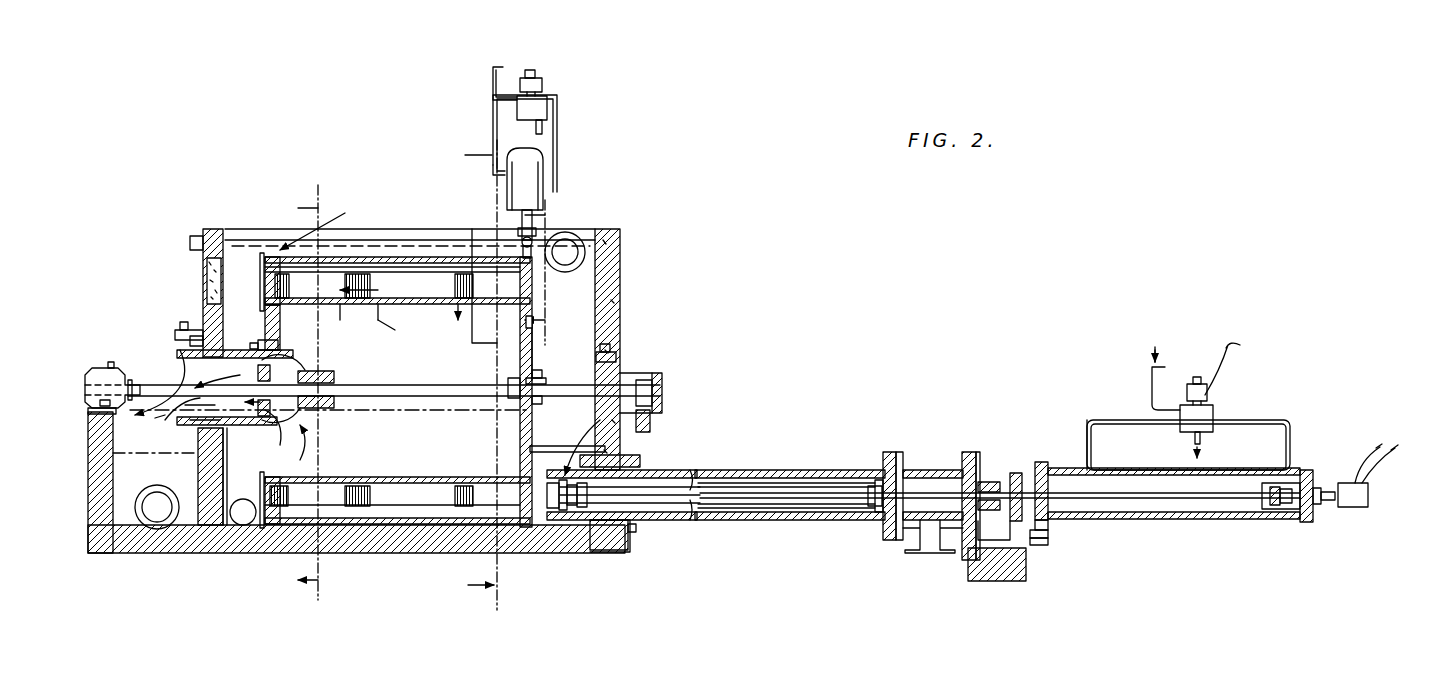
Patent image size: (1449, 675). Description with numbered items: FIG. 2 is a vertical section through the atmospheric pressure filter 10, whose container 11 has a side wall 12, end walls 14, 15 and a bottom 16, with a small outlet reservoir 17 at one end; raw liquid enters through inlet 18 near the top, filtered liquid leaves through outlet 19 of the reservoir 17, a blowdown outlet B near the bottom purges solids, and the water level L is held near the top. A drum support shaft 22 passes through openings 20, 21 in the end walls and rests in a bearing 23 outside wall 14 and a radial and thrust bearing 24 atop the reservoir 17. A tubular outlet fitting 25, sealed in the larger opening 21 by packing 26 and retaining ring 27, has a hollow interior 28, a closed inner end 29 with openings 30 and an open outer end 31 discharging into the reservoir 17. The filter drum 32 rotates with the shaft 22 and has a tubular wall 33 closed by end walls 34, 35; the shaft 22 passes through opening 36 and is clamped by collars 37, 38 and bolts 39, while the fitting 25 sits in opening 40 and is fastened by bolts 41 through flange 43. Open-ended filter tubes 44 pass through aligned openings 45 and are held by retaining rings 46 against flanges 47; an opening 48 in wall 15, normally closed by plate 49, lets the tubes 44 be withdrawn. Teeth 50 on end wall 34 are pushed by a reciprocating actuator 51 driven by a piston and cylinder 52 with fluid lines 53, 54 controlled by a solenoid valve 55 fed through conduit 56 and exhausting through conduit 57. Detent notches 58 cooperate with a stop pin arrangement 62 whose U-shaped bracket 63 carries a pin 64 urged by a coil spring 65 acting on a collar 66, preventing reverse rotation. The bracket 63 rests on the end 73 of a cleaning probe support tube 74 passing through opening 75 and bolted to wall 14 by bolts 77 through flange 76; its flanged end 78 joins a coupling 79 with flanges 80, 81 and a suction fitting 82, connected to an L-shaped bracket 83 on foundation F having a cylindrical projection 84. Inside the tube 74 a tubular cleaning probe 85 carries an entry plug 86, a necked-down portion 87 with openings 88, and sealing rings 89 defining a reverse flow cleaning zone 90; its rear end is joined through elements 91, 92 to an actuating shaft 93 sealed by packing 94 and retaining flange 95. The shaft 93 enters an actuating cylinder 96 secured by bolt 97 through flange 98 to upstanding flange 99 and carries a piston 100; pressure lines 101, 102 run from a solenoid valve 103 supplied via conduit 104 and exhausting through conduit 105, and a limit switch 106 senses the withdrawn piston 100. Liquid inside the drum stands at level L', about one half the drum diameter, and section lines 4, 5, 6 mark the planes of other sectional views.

The atmospheric pressure filter 10 is at (680, 192).
The container 11 is at (620, 300).
The side wall 12 is at (252, 229).
The end wall 14 is at (620, 262).
The end wall 15 is at (198, 478).
The bottom 16 is at (388, 553).
The outlet reservoir 17 is at (105, 470).
The raw liquid inlet 18 is at (580, 238).
The filtered liquid outlet 19 is at (150, 529).
The opening 20 is at (618, 358).
The opening 21 is at (227, 478).
The drum support shaft 22 is at (403, 385).
The bearing 23 is at (658, 373).
The radial and thrust bearing 24 is at (95, 368).
The tubular outlet fitting 25 is at (236, 350).
The packing material 26 is at (176, 352).
The packing retaining ring 27 is at (185, 330).
The hollow interior 28 is at (275, 365).
The closed inner end 29 is at (320, 371).
The openings 30 is at (318, 408).
The open outer end 31 is at (170, 418).
The filter drum 32 is at (430, 257).
The tubular wall 33 is at (363, 257).
The end wall 34 is at (508, 395).
The end wall 35 is at (305, 450).
The opening 36 is at (520, 380).
The clamping and sealing plate 37 is at (542, 372).
The clamping and sealing plate 38 is at (520, 370).
The bolts 39 is at (548, 380).
The central opening 40 is at (280, 445).
The bolts 41 is at (258, 344).
The annular flange 43 is at (280, 318).
The filter tubes 44 is at (374, 304).
The openings 45 is at (430, 500).
The tube retaining rings 46 is at (270, 290).
The annular flanges 47 is at (272, 257).
The enlarged opening 48 is at (207, 260).
The closure plate 49 is at (196, 236).
The drum actuating teeth 50 is at (532, 240).
The reciprocating actuator 51 is at (518, 215).
The piston and cylinder arrangement 52 is at (543, 165).
The fluid line 53 is at (557, 135).
The fluid line 54 is at (493, 130).
The solenoid valve 55 is at (542, 96).
The conduit 56 is at (496, 67).
The exhaust conduit 57 is at (542, 127).
The detent notches 58 is at (532, 322).
The stop pin arrangement 62 is at (660, 390).
The U-shaped support bracket 63 is at (648, 430).
The stop pin 64 is at (535, 475).
The coil spring 65 is at (640, 460).
The collar 66 is at (577, 436).
The end 73 is at (552, 530).
The cleaning probe support tube 74 is at (740, 470).
The opening 75 is at (600, 530).
The annular flange 76 is at (628, 545).
The bolts 77 is at (636, 530).
The outer flanged end 78 is at (888, 452).
The coupling member 79 is at (920, 470).
The flange 80 is at (902, 452).
The flange 81 is at (968, 452).
The fitting 82 is at (918, 553).
The L-shaped bracket support 83 is at (980, 460).
The cylindrical projection 84 is at (988, 482).
The cleaning probe 85 is at (725, 520).
The entry plug 86 is at (562, 528).
The necked down forward end portion 87 is at (582, 528).
The openings 88 is at (590, 500).
The sealing rings 89 is at (700, 470).
The reverse flow cleaning zone 90 is at (572, 528).
The collar 91 is at (878, 520).
The rod 92 is at (870, 505).
The actuating shaft 93 is at (1050, 470).
The packing material 94 is at (990, 522).
The packing retaining flange 95 is at (1016, 473).
The actuating cylinder 96 is at (1150, 519).
The bolt 97 is at (1048, 525).
The annular flange 98 is at (1048, 537).
The upstanding flange 99 is at (1038, 545).
The piston 100 is at (1270, 512).
The pressure fluid line 101 is at (1258, 420).
The pressure fluid line 102 is at (1127, 420).
The solenoid valve 103 is at (1213, 405).
The conduit 104 is at (1160, 367).
The exhaust conduit 105 is at (1202, 443).
The limit switch means 106 is at (1290, 483).
The section line 4 is at (305, 389).
The section line 5 is at (486, 368).
The section line 6 is at (549, 271).
The water level L is at (411, 220).
The water level L' is at (330, 380).
The blowdown outlet B is at (243, 525).
The foundation means F is at (1015, 581).